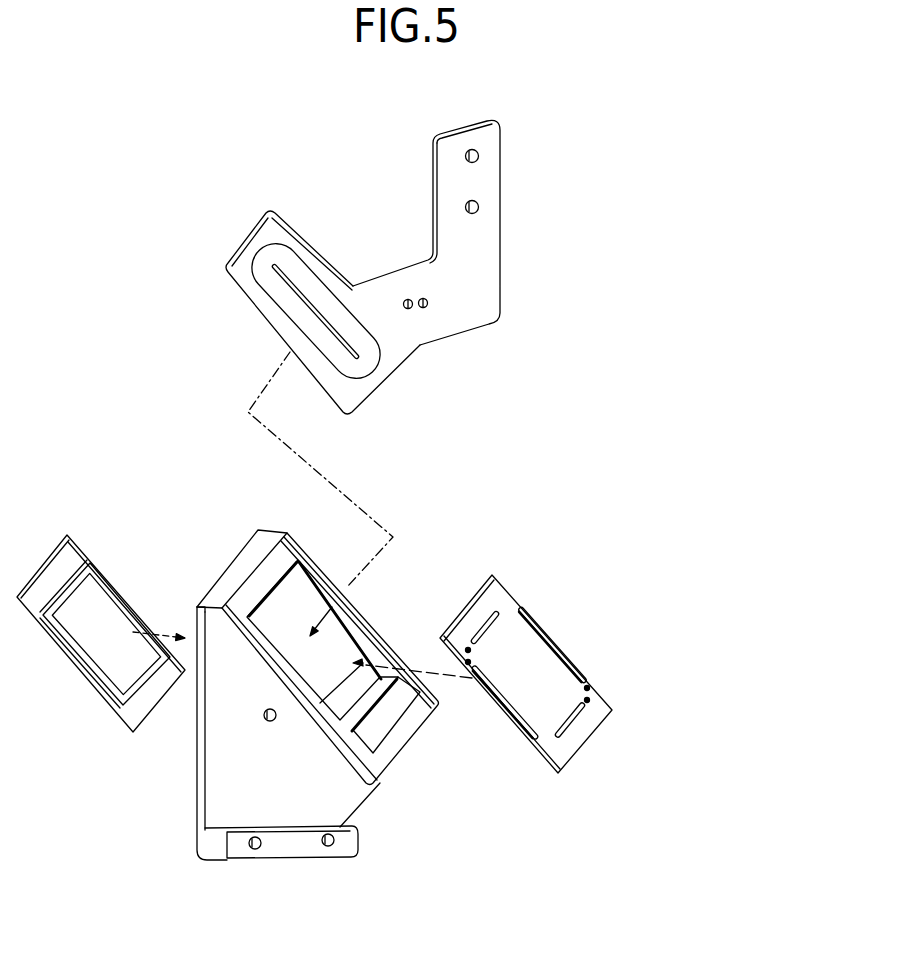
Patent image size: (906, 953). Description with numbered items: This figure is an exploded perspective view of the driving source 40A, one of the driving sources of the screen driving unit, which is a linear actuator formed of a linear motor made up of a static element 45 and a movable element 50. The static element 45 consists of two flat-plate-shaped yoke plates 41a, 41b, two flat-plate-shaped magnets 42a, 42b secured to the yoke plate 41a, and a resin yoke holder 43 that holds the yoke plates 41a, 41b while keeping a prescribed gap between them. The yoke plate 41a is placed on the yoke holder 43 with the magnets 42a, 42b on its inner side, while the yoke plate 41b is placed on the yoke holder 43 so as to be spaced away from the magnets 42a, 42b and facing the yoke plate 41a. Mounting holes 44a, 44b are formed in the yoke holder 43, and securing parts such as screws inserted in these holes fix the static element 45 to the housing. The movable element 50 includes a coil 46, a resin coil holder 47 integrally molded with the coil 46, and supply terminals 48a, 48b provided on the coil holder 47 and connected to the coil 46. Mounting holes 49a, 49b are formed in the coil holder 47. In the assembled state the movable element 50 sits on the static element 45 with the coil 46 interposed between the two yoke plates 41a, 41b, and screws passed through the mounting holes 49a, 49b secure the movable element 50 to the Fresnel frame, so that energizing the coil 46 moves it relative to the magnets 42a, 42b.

The driving source 40A is at (735, 118).
The yoke plate 41a is at (70, 548).
The yoke plate 41b is at (503, 593).
The magnet 42a is at (107, 588).
The magnet 42b is at (95, 653).
The yoke holder 43 is at (215, 782).
The mounting hole 44a is at (256, 850).
The mounting hole 44b is at (330, 847).
The static element 45 is at (682, 535).
The coil 46 is at (290, 250).
The coil holder 47 is at (490, 263).
The supply terminal 48a is at (407, 300).
The supply terminal 48b is at (423, 299).
The mounting hole 49a is at (479, 156).
The mounting hole 49b is at (479, 207).
The movable element 50 is at (640, 127).